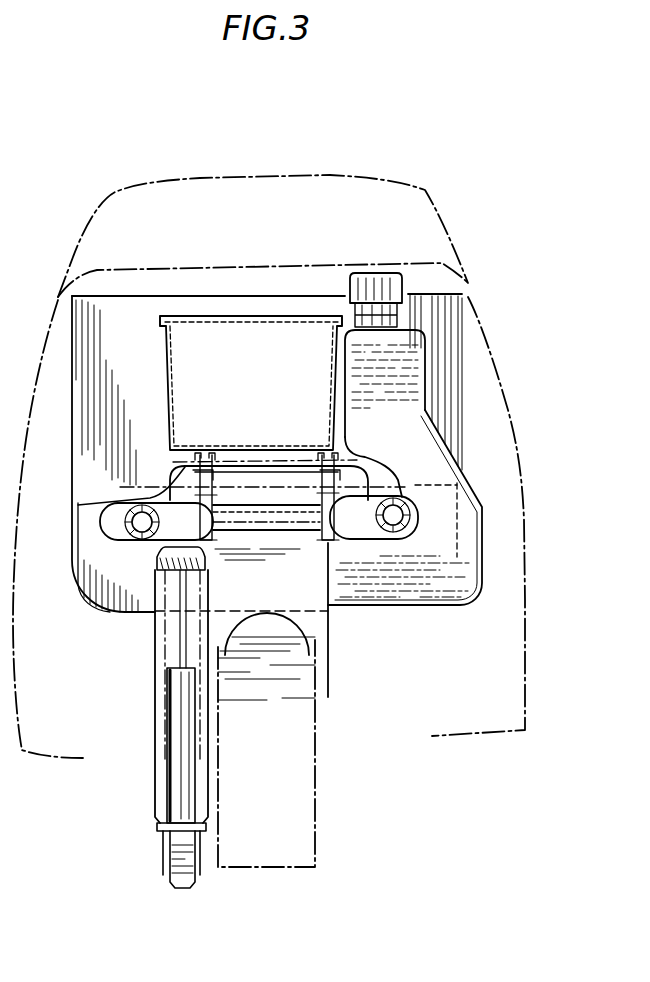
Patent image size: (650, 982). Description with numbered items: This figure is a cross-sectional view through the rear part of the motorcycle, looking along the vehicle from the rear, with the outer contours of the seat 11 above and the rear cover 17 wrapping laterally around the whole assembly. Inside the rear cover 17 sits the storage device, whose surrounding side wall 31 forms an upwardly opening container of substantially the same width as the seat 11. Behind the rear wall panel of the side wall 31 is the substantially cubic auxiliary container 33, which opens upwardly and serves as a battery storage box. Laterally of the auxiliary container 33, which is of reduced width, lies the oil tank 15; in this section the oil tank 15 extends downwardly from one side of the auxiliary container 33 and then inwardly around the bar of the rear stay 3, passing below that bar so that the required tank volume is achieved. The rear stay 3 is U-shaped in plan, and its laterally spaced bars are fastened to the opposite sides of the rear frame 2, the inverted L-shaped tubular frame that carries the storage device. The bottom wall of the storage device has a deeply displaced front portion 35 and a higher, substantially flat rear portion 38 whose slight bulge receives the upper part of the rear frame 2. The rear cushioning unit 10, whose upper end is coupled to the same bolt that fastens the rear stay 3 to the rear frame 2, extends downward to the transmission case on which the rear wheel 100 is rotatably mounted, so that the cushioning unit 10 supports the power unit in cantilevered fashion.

The seat 11 is at (438, 181).
The rear cover 17 is at (518, 452).
The side wall 31 is at (460, 412).
The oil tank 15 is at (408, 370).
The auxiliary container 33 is at (168, 382).
The rear portion 38 is at (78, 505).
The rear stay 3 is at (100, 522).
The rear frame 2 is at (273, 535).
The front portion 35 is at (123, 614).
The rear cushioning unit 10 is at (175, 709).
The rear wheel 100 is at (325, 788).